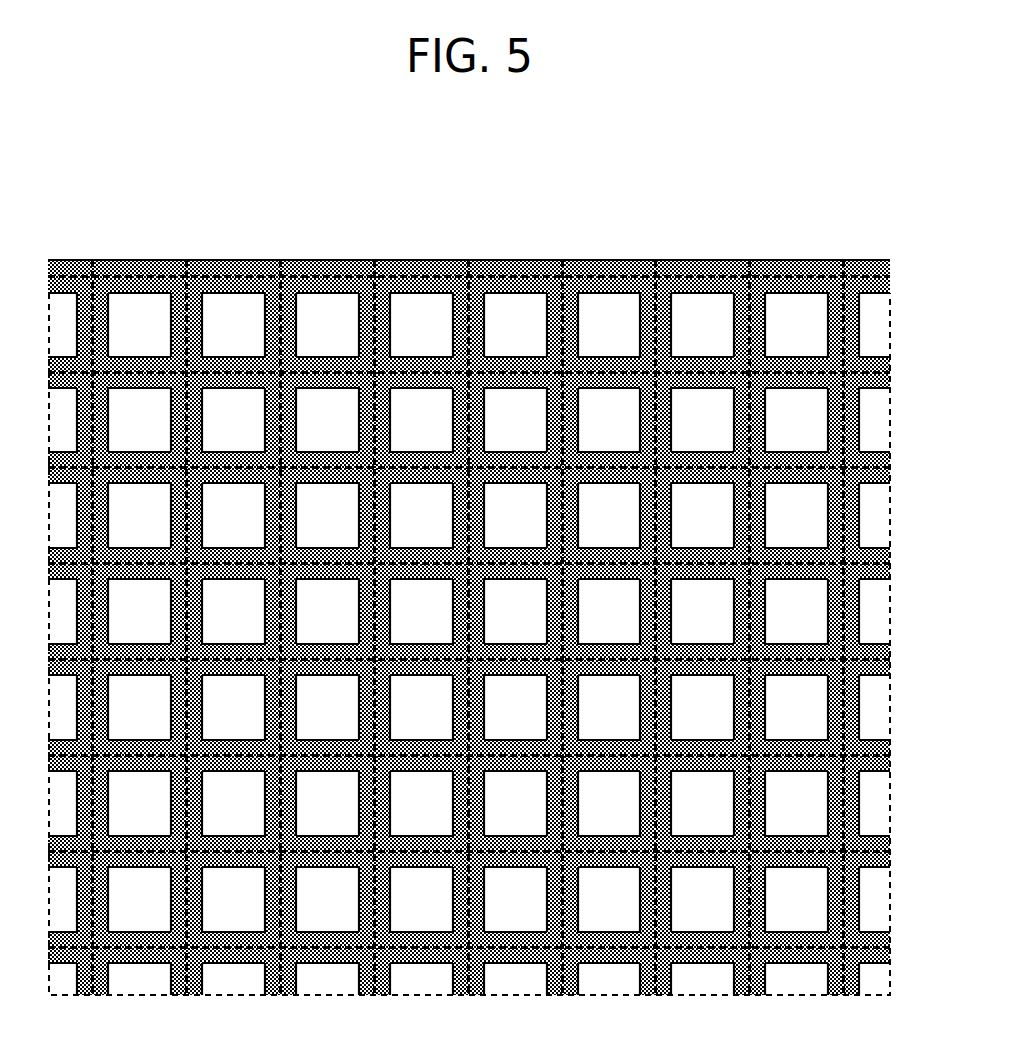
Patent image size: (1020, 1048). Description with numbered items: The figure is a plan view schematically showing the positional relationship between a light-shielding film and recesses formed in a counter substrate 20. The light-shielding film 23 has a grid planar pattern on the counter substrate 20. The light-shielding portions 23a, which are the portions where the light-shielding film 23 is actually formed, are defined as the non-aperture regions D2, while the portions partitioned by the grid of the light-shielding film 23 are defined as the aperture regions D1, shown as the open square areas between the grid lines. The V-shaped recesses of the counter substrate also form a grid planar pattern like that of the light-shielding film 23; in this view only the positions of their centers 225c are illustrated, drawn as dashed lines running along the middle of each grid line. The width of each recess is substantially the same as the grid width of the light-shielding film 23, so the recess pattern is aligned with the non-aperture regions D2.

The counter substrate 20 is at (831, 161).
The light-shielding film 23 is at (410, 275).
The light-shielding portions 23a is at (322, 275).
The centers of the recesses 225c is at (477, 290).
The aperture regions D1 is at (792, 303).
The non-aperture regions D2 is at (228, 277).